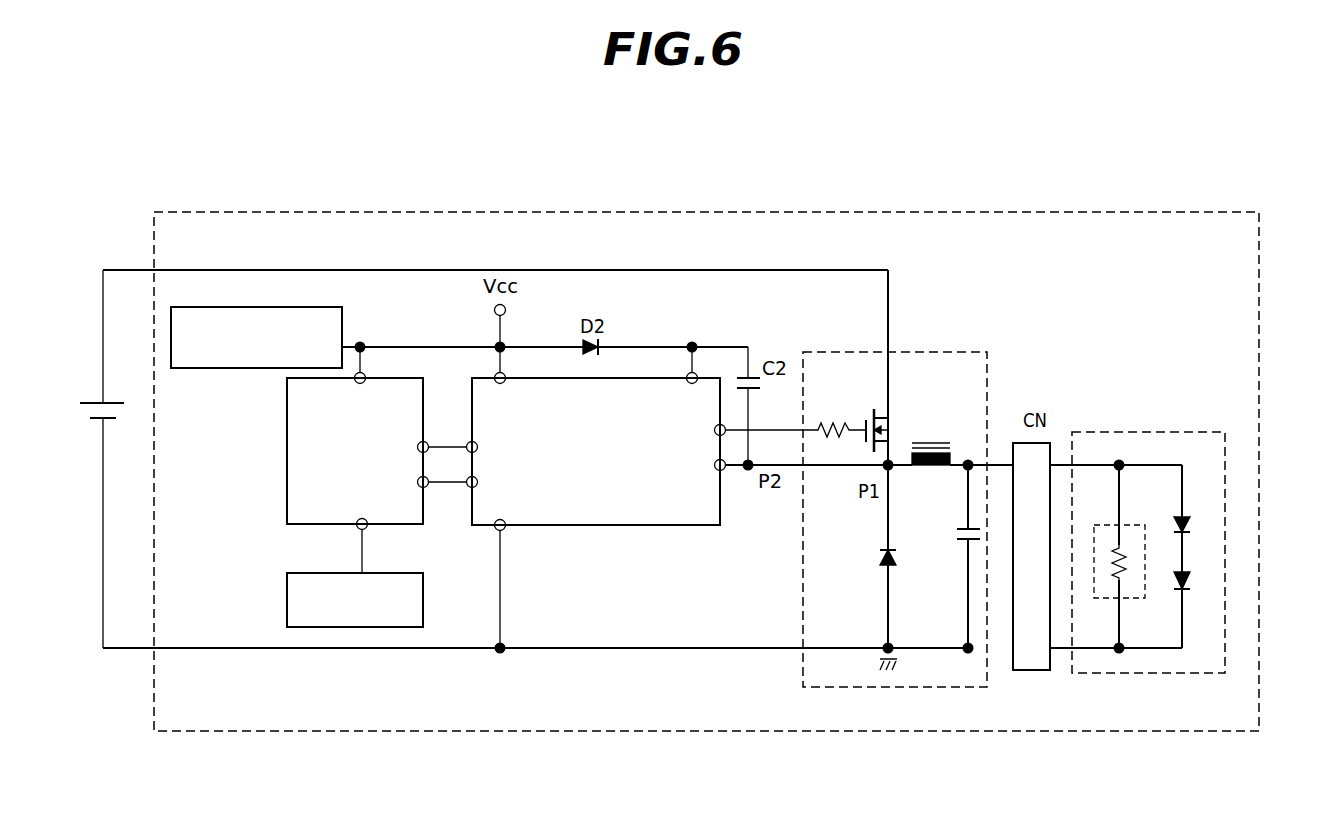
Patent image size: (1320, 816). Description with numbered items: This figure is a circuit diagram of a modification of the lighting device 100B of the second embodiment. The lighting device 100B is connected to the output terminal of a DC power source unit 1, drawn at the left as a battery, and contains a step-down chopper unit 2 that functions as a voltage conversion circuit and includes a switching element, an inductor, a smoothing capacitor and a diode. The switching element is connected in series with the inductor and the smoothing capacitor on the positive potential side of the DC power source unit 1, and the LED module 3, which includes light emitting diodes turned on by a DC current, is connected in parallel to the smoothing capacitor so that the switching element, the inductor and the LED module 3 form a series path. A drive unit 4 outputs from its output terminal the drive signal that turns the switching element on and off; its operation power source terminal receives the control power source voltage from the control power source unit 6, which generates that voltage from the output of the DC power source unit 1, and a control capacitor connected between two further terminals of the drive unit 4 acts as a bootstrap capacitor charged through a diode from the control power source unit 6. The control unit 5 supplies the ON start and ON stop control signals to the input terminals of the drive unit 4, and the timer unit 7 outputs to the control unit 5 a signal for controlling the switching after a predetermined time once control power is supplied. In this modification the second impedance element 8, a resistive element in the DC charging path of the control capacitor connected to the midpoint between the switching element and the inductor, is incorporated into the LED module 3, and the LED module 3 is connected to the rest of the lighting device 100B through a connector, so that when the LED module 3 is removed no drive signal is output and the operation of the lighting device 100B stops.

The lighting device 100B is at (1172, 198).
The DC power source unit 1 is at (113, 396).
The step-down chopper unit 2 is at (968, 352).
The LED module 3 is at (1152, 534).
The drive unit 4 is at (471, 398).
The control unit 5 is at (287, 410).
The control power source unit 6 is at (303, 307).
The timer unit 7 is at (423, 585).
The second impedance element 8 is at (1128, 523).